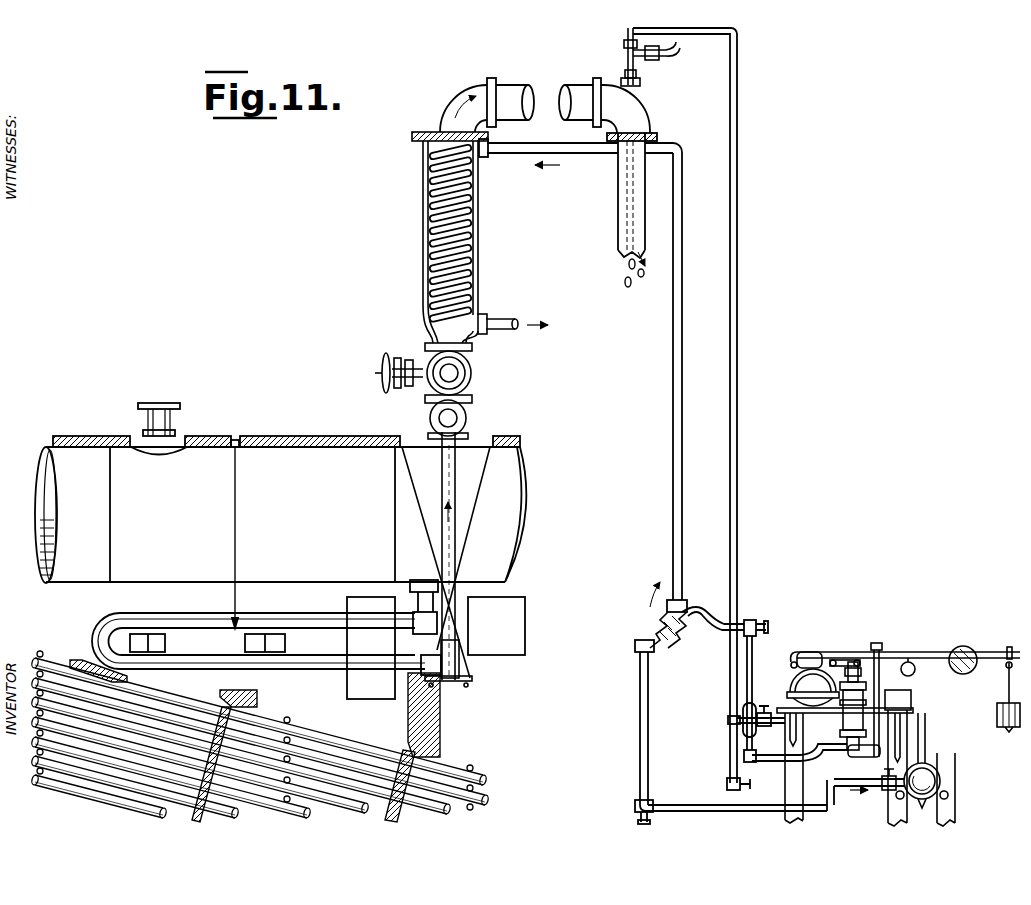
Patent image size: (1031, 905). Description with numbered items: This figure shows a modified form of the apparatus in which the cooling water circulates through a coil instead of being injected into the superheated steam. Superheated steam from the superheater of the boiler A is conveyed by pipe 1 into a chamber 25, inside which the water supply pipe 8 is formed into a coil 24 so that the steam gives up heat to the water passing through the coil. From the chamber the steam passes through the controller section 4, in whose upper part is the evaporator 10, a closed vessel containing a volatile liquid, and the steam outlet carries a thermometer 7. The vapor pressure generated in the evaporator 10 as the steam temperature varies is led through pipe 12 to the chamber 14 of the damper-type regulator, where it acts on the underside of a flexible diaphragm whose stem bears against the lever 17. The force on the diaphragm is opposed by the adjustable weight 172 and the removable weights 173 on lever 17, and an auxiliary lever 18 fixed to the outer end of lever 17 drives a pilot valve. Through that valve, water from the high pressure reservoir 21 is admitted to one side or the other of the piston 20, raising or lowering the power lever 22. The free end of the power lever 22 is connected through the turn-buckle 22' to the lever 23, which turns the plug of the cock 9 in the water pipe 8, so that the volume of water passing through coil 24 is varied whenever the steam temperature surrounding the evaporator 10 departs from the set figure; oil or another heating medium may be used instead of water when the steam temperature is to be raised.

The boiler A is at (280, 548).
The pipe 1 is at (453, 474).
The second section 4 is at (618, 170).
The thermometer 7 is at (620, 84).
The water supply pipe 8 is at (673, 368).
The cock 9 is at (660, 636).
The evaporator 10 is at (626, 282).
The pipe 12 is at (737, 286).
The chamber 14 is at (810, 688).
The lever 17 is at (808, 655).
The adjustable weight 172 is at (966, 651).
The removable weights 173 is at (997, 717).
The auxiliary lever 18 is at (917, 659).
The piston 20 is at (847, 721).
The high pressure reservoir 21 is at (942, 781).
The power lever 22 is at (799, 764).
The turn-buckle 22' is at (761, 699).
The lever 23 is at (692, 610).
The coil 24 is at (470, 236).
The chamber 25 is at (478, 288).